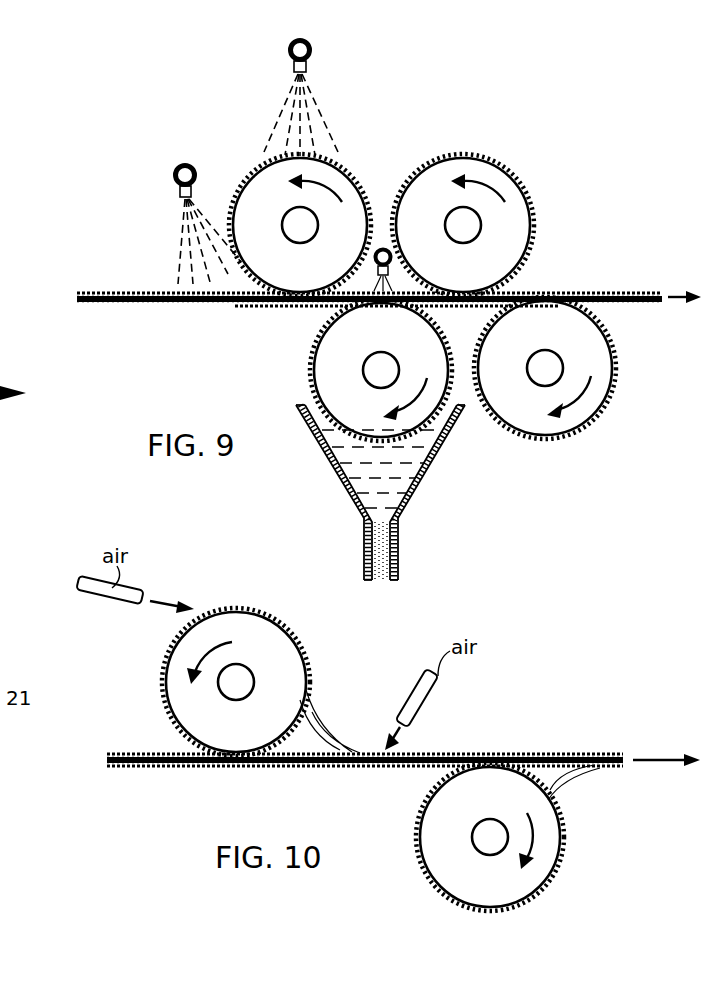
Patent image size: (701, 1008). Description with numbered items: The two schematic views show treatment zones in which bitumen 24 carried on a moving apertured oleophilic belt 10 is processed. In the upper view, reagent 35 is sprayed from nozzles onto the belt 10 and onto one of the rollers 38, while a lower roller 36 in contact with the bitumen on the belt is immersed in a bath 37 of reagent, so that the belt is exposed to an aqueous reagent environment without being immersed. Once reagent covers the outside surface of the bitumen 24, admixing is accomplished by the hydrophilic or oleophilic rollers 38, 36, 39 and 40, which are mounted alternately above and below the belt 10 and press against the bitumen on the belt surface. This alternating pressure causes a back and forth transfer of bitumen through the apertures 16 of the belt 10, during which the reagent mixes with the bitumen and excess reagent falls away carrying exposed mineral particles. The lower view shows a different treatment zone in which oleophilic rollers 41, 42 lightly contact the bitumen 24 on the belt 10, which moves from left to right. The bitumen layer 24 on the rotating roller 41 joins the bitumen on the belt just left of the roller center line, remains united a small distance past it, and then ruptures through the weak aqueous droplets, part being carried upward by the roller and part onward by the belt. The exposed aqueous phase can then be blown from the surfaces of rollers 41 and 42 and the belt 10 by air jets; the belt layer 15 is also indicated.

In FIG. 9, the apertured oleophilic belt 10 is at (68, 302).
In FIG. 10, the apertured oleophilic belt 10 is at (452, 751).
In FIG. 9, the backing layer of web 15 is at (163, 303).
In FIG. 10, the backing layer of web 15 is at (160, 767).
In FIG. 9, the apertures of the belt 16 is at (118, 303).
In FIG. 10, the apertures of the belt 16 is at (142, 752).
In FIG. 9, the bitumen 24 is at (238, 185).
In FIG. 10, the bitumen 24 is at (306, 648).
In FIG. 9, the reagent 35 is at (310, 43).
In FIG. 9, the roller 36 is at (393, 336).
In FIG. 9, the bath of reagent 37 is at (425, 478).
In FIG. 9, the roller 38 is at (312, 272).
In FIG. 9, the roller 39 is at (475, 272).
In FIG. 9, the roller 40 is at (557, 336).
In FIG. 10, the oleophilic roller 41 is at (288, 701).
In FIG. 10, the oleophilic roller 42 is at (479, 885).